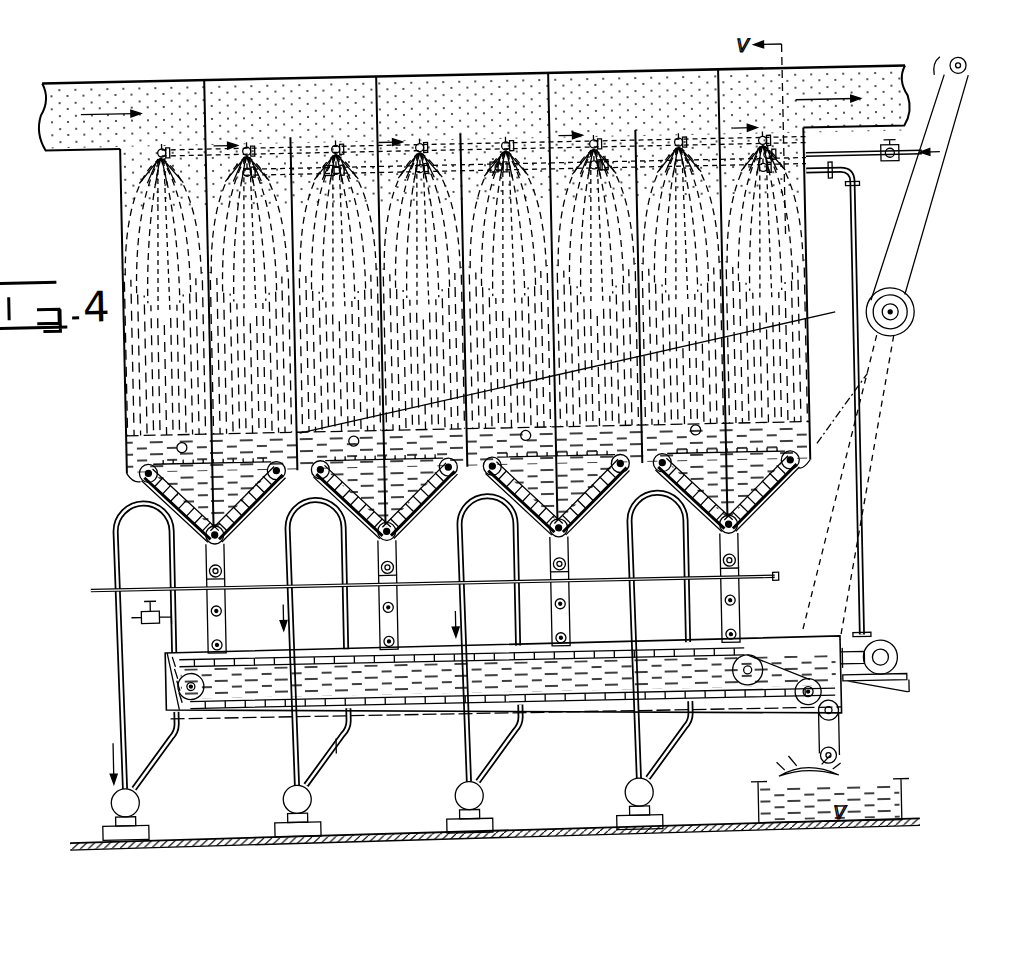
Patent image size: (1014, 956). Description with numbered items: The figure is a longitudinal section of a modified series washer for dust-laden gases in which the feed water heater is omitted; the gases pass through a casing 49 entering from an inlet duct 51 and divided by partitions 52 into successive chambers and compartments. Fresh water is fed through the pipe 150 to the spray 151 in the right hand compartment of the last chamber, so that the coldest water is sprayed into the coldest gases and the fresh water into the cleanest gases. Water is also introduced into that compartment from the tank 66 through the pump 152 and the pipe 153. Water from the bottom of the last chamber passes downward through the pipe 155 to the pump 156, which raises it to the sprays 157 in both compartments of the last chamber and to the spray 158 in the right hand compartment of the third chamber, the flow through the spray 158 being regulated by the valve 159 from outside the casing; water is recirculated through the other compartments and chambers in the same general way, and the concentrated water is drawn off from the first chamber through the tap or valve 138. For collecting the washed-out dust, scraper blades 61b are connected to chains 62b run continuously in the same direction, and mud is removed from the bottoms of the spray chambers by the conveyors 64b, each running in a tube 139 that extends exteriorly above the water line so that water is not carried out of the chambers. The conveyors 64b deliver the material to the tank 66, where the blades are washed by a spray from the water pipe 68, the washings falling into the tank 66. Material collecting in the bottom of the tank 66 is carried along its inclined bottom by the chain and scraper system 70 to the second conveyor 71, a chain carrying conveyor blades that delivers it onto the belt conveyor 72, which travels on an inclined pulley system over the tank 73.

The spray chamber 49 is at (508, 95).
The inlet duct 51 is at (96, 97).
The partitions 52 is at (212, 90).
The scraper blades 61b is at (130, 470).
The chains 62b is at (168, 528).
The conveyors 64b is at (224, 565).
The tank 66 is at (514, 645).
The water pipe 68 is at (332, 584).
The chain and scraper system 70 is at (332, 648).
The second conveyor 71 is at (835, 720).
The belt conveyor 72 is at (812, 768).
The tank 73 is at (753, 806).
The tap or valve 138 is at (148, 618).
The tube 139 is at (394, 598).
The pipe 150 is at (877, 168).
The spray 151 is at (786, 155).
The pump 152 is at (886, 650).
The pipe 153 is at (864, 488).
The pipe 155 is at (108, 612).
The pump 156 is at (133, 798).
The sprays 157 is at (690, 140).
The spray 158 is at (254, 146).
The valve 159 is at (688, 146).